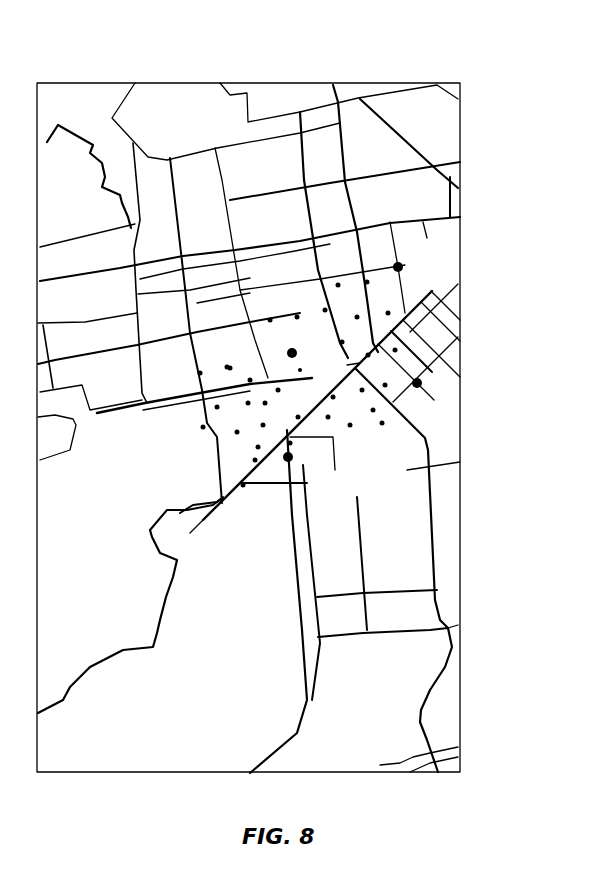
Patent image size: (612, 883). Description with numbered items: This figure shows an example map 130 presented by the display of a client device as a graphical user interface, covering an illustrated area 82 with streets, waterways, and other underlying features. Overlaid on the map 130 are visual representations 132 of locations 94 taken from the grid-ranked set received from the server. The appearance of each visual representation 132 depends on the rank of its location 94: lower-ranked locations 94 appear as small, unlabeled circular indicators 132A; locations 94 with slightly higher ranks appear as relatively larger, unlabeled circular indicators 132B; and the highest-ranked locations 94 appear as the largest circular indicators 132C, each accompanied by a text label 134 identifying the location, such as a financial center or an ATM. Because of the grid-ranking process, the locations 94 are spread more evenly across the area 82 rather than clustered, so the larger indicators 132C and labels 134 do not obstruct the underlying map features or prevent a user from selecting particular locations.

The map 130 is at (261, 400).
The area 82 is at (388, 58).
The label 134 is at (470, 239).
The small circular indicator 132A is at (246, 331).
The larger circular indicator 132B is at (246, 491).
The largest circular indicator 132C is at (389, 261).
The visual representation 132 is at (279, 498).
The location 94 is at (328, 499).